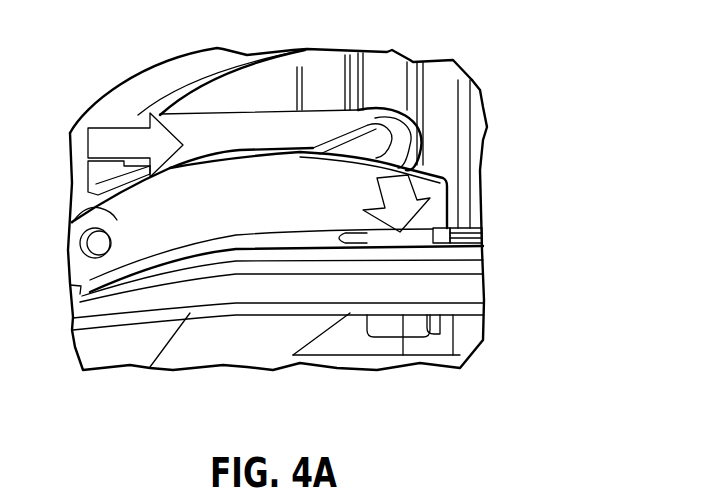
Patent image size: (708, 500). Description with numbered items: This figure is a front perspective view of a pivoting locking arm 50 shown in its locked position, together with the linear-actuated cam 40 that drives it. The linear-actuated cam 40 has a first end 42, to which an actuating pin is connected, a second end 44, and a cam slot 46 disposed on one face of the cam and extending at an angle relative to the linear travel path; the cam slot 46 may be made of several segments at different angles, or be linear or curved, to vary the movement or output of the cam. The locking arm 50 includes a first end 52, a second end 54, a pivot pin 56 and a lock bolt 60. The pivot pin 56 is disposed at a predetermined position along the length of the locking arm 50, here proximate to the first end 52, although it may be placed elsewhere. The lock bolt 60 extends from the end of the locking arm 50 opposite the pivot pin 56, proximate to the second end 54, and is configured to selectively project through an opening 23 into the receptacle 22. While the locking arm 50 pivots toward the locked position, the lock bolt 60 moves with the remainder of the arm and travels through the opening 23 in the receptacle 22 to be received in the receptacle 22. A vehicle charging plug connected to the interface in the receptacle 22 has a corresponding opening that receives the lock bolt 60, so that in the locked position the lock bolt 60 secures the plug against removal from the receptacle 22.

The receptacle 22 is at (496, 277).
The opening 23 is at (455, 225).
The linear-actuated cam 40 is at (256, 138).
The first end 42 is at (133, 175).
The second end 44 is at (397, 135).
The cam slot 46 is at (380, 137).
The locking arm 50 is at (248, 187).
The first end 52 is at (88, 213).
The second end 54 is at (438, 202).
The pivot pin 56 is at (95, 248).
The lock bolt 60 is at (392, 327).